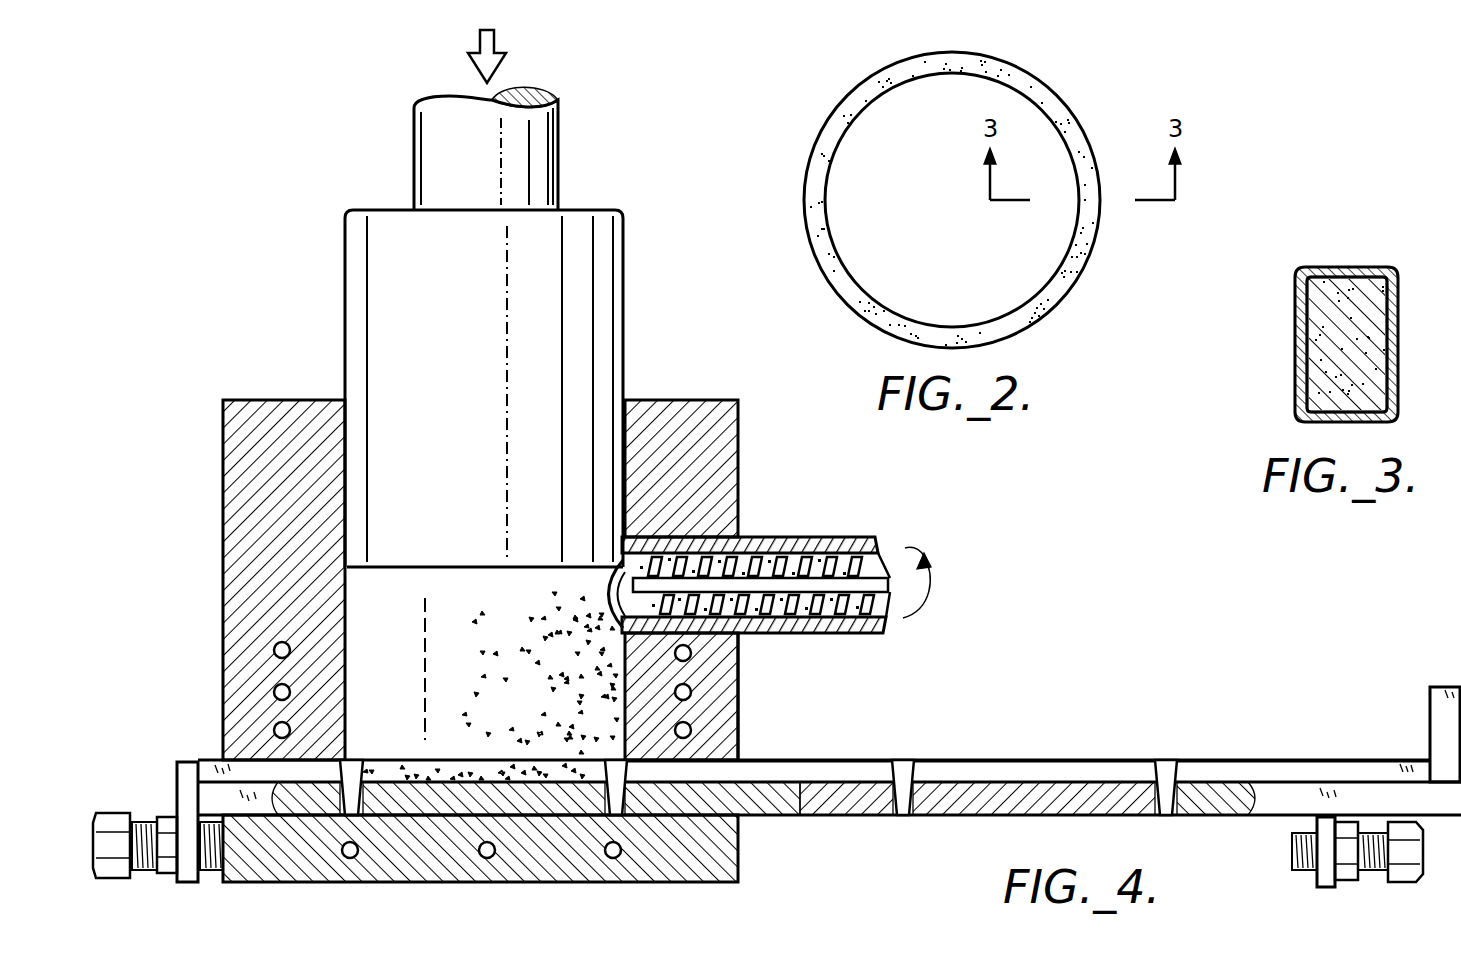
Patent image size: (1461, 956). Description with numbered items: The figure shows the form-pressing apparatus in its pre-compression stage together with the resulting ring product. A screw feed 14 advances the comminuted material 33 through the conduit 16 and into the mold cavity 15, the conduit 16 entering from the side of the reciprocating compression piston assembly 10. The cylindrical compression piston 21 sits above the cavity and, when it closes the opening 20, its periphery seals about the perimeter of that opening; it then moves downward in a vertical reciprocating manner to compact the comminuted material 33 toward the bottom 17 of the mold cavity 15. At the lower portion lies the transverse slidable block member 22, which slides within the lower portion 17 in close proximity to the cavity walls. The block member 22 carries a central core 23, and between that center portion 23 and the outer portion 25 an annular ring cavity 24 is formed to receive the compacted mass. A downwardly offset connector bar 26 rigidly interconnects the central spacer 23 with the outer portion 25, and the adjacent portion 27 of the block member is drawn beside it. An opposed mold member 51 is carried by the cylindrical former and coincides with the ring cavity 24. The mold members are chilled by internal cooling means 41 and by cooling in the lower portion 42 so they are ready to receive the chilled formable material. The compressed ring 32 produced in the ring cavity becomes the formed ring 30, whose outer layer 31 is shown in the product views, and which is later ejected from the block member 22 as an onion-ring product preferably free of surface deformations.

In FIG. 4, the reciprocating compression piston assembly 10 is at (740, 447).
In FIG. 4, the screw feed 14 is at (860, 572).
In FIG. 4, the mold cavity 15 is at (426, 596).
In FIG. 4, the conduit 16 is at (790, 538).
In FIG. 4, the bottom of mold cavity 17 is at (738, 707).
In FIG. 4, the opening 20 is at (632, 400).
In FIG. 4, the compression piston 21 is at (575, 335).
In FIG. 4, the slidable block member 22 is at (803, 818).
In FIG. 4, the central core 23 is at (427, 785).
In FIG. 4, the annular ring cavity 24 is at (352, 770).
In FIG. 4, the outer portion of the block member 25 is at (272, 780).
In FIG. 4, the connector bar 26 is at (995, 768).
In FIG. 4, the strip portion 27 is at (620, 770).
In FIG. 2, the formed ring 30 is at (1081, 275).
In FIG. 3, the formed ring 30 is at (1295, 300).
In FIG. 2, the outer skin layer 31 is at (1078, 234).
In FIG. 3, the outer skin layer 31 is at (1302, 330).
In FIG. 3, the compressed ring 32 is at (1312, 375).
In FIG. 4, the comminuted material 33 is at (498, 625).
In FIG. 4, the internal cooling means 41 is at (692, 691).
In FIG. 4, the lower portion 42 is at (613, 866).
In FIG. 4, the opposed mold member 51 is at (1140, 760).